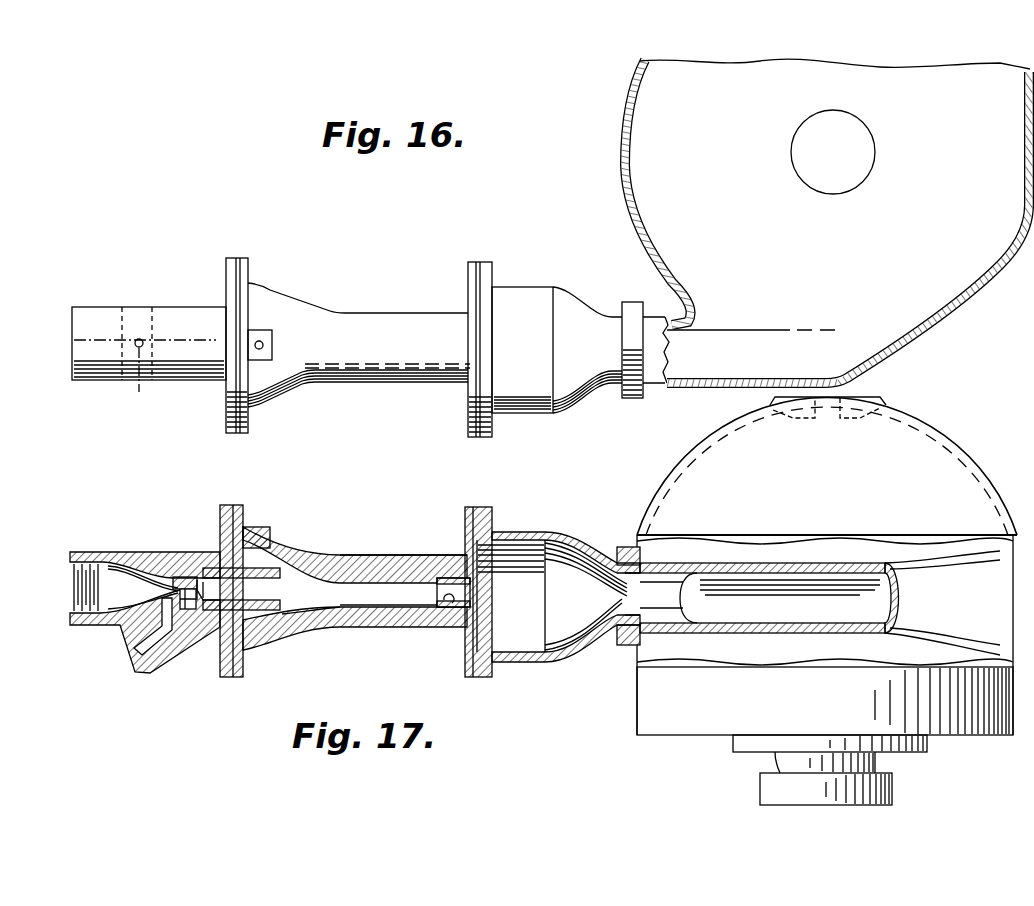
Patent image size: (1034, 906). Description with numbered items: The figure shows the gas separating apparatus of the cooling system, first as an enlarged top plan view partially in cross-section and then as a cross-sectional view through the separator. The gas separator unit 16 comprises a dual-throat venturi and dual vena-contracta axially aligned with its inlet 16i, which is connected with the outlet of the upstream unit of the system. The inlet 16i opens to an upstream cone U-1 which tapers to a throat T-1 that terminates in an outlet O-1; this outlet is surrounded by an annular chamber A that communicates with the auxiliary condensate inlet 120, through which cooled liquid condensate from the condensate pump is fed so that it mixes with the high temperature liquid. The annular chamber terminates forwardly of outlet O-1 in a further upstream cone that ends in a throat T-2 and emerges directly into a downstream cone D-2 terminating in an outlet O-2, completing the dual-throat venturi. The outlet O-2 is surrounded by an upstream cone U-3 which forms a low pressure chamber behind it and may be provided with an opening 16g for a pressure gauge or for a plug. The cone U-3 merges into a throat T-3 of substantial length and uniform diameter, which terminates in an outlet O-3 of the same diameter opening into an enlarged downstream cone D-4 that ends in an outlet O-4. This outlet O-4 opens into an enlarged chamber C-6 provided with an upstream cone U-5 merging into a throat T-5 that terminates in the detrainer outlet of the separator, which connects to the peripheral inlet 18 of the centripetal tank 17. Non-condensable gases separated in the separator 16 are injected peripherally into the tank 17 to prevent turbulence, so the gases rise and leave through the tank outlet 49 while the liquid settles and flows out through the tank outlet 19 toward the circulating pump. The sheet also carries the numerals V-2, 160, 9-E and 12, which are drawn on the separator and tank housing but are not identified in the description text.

In FIG. 16, the gas separator unit 16 is at (372, 320).
In FIG. 17, the gas separator unit 16 is at (392, 555).
In FIG. 16, the opening 16g is at (265, 343).
In FIG. 17, the opening 16g is at (256, 528).
In FIG. 17, the inlet 16i is at (72, 575).
In FIG. 16, the centripetal tank 17 is at (72, 340).
In FIG. 17, the centripetal tank 17 is at (982, 473).
In FIG. 16, the peripheral inlet 18 is at (625, 302).
In FIG. 17, the peripheral inlet 18 is at (641, 611).
In FIG. 16, the tank outlet 19 is at (862, 170).
In FIG. 17, the tank outlet 19 is at (770, 804).
In FIG. 16, the auxiliary inlet 120 is at (143, 361).
In FIG. 17, the auxiliary inlet 120 is at (138, 650).
In FIG. 17, the annular chamber A is at (170, 575).
In FIG. 17, the valve V-2 is at (196, 585).
In FIG. 17, the upstream cone U-1 is at (112, 602).
In FIG. 17, the throat T-1 is at (222, 605).
In FIG. 17, the outlet O-1 is at (200, 602).
In FIG. 17, the throat T-2 is at (248, 612).
In FIG. 17, the downstream cone D-2 is at (284, 596).
In FIG. 17, the outlet O-2 is at (300, 615).
In FIG. 17, the throat T-3 is at (412, 598).
In FIG. 17, the outlet O-3 is at (447, 604).
In FIG. 17, the downstream cone D-4 is at (452, 577).
In FIG. 17, the upstream cone U-3 is at (298, 576).
In FIG. 17, the outlet O-4 is at (479, 600).
In FIG. 17, the enlarged chamber C-6 is at (527, 643).
In FIG. 17, the converging outlet 160 is at (612, 628).
In FIG. 17, the upstream cone U-5 is at (621, 596).
In FIG. 17, the throat T-5 is at (652, 584).
In FIG. 17, the diffuser outlet 9-E is at (845, 612).
In FIG. 17, the tank outlet 49 is at (847, 418).
In FIG. 17, the housing block 12 is at (991, 734).